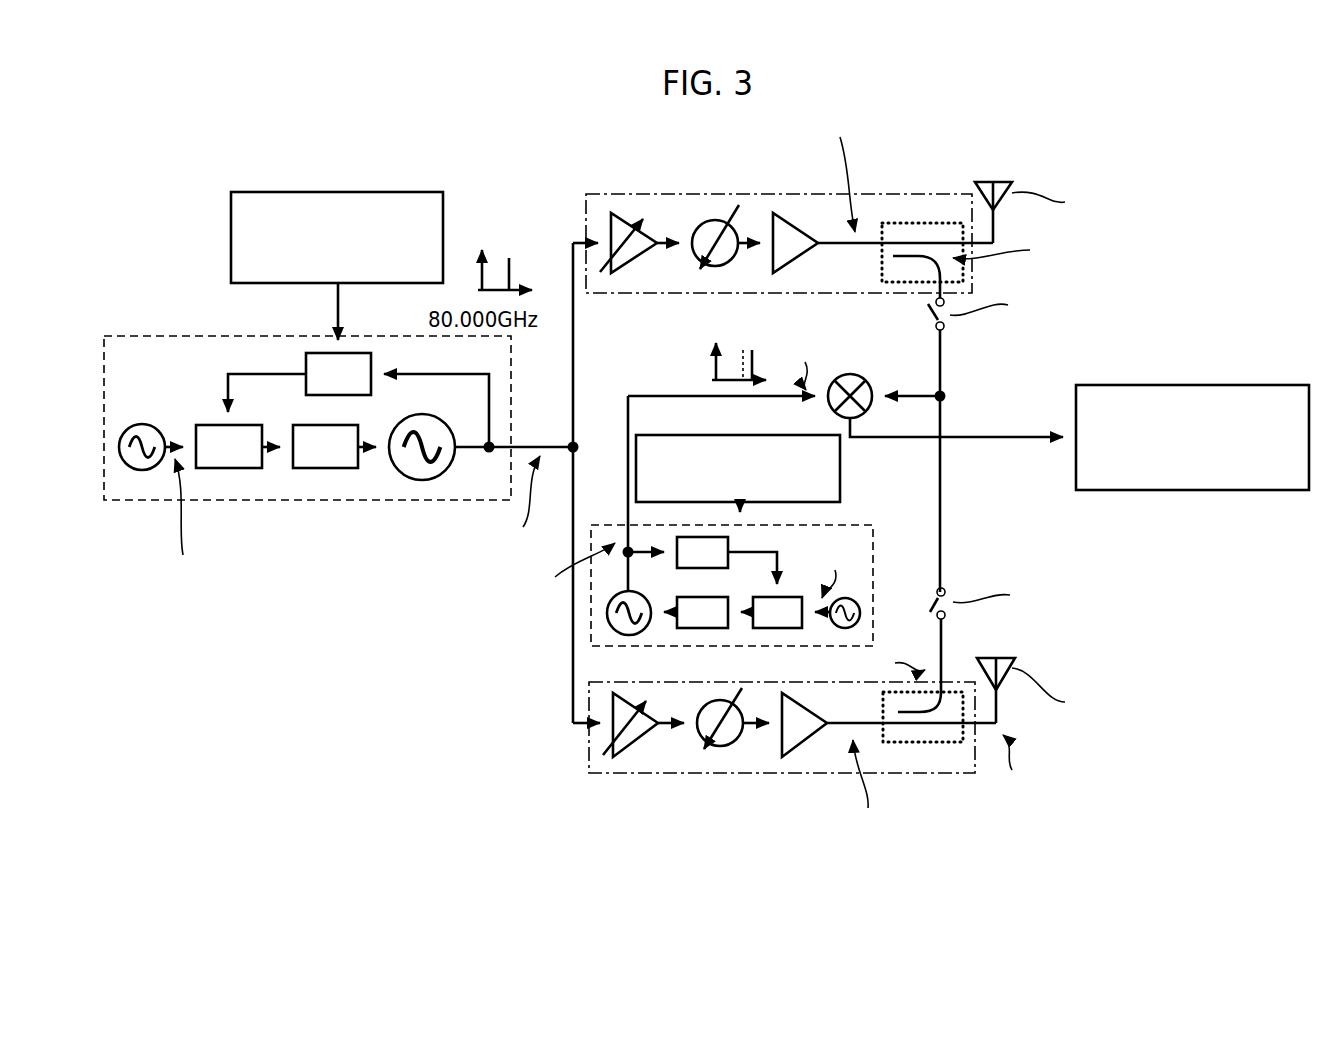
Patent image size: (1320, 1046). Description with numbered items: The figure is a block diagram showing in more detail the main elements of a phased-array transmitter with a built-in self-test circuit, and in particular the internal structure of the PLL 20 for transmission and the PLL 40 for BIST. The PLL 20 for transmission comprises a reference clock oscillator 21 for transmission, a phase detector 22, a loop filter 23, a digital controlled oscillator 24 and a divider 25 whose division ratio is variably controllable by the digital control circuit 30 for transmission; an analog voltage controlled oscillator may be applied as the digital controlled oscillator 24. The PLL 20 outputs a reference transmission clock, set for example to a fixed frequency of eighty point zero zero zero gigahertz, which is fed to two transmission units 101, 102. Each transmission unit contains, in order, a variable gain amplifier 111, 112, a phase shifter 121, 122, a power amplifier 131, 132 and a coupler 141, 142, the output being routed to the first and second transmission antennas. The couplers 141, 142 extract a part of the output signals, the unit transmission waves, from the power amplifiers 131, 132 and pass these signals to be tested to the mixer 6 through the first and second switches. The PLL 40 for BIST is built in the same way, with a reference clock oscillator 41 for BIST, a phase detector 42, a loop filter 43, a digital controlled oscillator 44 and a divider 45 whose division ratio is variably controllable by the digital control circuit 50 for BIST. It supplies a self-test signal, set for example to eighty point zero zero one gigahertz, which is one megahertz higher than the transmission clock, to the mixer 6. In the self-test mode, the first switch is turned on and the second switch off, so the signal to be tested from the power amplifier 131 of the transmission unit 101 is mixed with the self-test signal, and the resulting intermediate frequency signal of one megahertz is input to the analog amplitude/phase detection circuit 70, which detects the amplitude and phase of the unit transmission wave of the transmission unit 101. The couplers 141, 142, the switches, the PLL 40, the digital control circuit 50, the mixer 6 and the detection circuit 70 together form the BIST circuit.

The mixer 6 is at (869, 382).
The PLL for transmission 20 is at (372, 500).
The reference clock oscillator for transmission 21 is at (140, 470).
The phase detector 22 is at (222, 468).
The loop filter 23 is at (332, 468).
The digital controlled oscillator 24 is at (425, 480).
The divider 25 is at (306, 358).
The digital control circuit for transmission 30 is at (393, 192).
The PLL for BIST 40 is at (590, 597).
The reference clock oscillator for BIST 41 is at (858, 601).
The phase detector 42 is at (790, 628).
The loop filter 43 is at (717, 628).
The digital controlled oscillator 44 is at (607, 617).
The divider 45 is at (735, 538).
The digital control circuit for BIST 50 is at (843, 486).
The analog amplitude/phase detection circuit 70 is at (1158, 385).
The transmission unit 101 is at (593, 192).
The transmission unit 102 is at (913, 775).
The variable gain amplifier 111 is at (620, 213).
The variable gain amplifier 112 is at (640, 745).
The phase shifter 121 is at (713, 218).
The phase shifter 122 is at (724, 748).
The power amplifier 131 is at (787, 213).
The power amplifier 132 is at (803, 745).
The coupler 141 is at (900, 222).
The coupler 142 is at (952, 748).